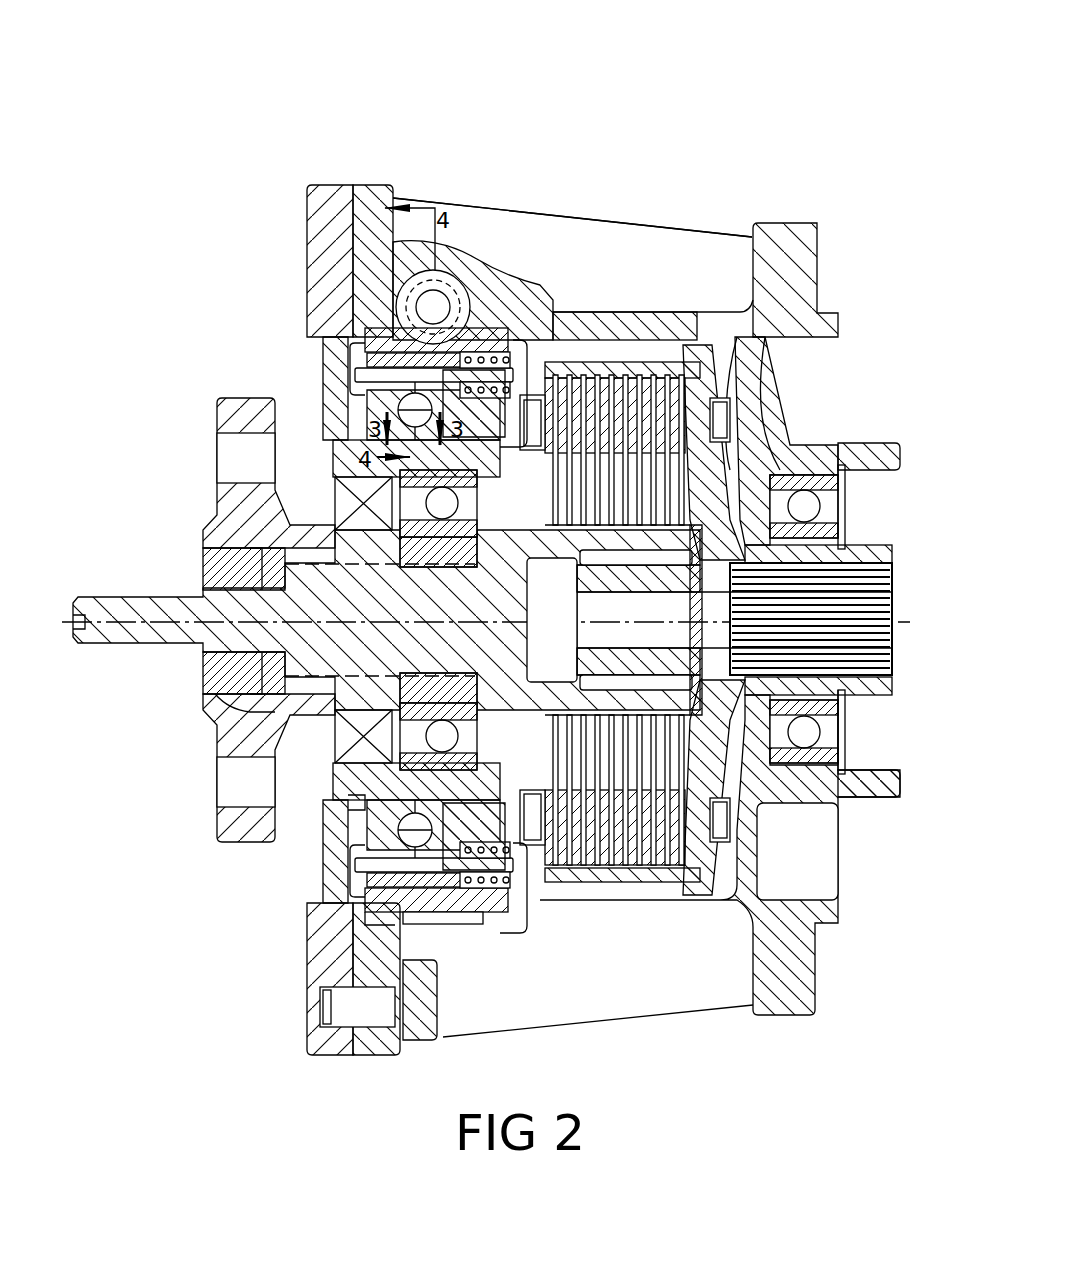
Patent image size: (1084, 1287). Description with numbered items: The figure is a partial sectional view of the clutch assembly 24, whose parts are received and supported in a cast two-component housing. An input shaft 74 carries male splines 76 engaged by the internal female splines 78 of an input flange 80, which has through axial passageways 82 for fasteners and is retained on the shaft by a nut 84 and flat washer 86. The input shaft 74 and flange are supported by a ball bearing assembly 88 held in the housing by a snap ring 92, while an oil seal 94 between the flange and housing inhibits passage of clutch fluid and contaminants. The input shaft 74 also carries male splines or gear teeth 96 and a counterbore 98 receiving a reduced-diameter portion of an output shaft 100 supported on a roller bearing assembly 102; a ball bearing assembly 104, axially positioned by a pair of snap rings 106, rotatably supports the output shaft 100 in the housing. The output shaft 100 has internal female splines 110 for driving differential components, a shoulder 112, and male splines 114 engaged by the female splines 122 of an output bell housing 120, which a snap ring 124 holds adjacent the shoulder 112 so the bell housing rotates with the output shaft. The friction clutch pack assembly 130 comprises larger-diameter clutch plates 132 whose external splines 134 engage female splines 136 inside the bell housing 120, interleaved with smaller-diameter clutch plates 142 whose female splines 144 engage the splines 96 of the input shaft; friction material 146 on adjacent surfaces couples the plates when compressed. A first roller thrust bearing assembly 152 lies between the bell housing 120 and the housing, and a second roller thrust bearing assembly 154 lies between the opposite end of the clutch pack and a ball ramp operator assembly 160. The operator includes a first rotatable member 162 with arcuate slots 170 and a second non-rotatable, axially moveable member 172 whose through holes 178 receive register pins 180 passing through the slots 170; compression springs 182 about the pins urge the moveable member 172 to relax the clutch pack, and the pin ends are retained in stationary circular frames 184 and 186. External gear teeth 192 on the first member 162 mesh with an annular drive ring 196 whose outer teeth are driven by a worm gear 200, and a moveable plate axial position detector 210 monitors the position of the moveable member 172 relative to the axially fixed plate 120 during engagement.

The clutch assembly 24 is at (616, 133).
The input shaft 74 is at (122, 638).
The external or male splines 76 is at (255, 565).
The internal female splines 78 is at (280, 595).
The input flange 80 is at (217, 397).
The through axial passageways 82 is at (240, 760).
The nut 84 is at (240, 685).
The flat washer 86 is at (250, 700).
The ball bearing assembly 88 is at (345, 738).
The snap ring 92 is at (400, 800).
The oil seal 94 is at (395, 765).
The external or male splines or gear teeth 96 is at (462, 520).
The counterbore 98 is at (552, 620).
The output shaft 100 is at (838, 692).
The roller bearing assembly 102 is at (645, 567).
The ball bearing assembly 104 is at (832, 500).
The snap rings 106 is at (832, 742).
The internal or female splines 110 is at (840, 562).
The shoulder 112 is at (745, 470).
The external or male splines or gear teeth 114 is at (735, 592).
The output bell housing 120 is at (720, 398).
The internal or female splines 122 is at (700, 482).
The snap ring 124 is at (700, 688).
The multiple plate friction clutch pack assembly 130 is at (713, 205).
The first plurality of larger diameter friction clutch plates 132 is at (590, 388).
The male or external splines 134 is at (642, 388).
The internal or female splines 136 is at (612, 388).
The second plurality of smaller diameter friction clutch plates 142 is at (690, 445).
The internal or female splines 144 is at (680, 458).
The clutch paper or friction material 146 is at (575, 380).
The first roller thrust bearing assembly 152 is at (755, 337).
The second roller thrust bearing assembly 154 is at (535, 398).
The ball ramp operator assembly 160 is at (341, 181).
The first rotatable member 162 is at (395, 393).
The arcuate slots 170 is at (385, 870).
The second axially moveable member 172 is at (490, 790).
The through holes or apertures 178 is at (432, 920).
The register pins 180 is at (480, 905).
The compression springs 182 is at (535, 412).
The stationary circular frame 184 is at (372, 905).
The stationary circular frame 186 is at (485, 393).
The male or external splines or gear teeth 192 is at (380, 362).
The annular drive ring or collar 196 is at (385, 335).
The worm gear 200 is at (400, 300).
The moveable plate axial position detector 210 is at (385, 850).